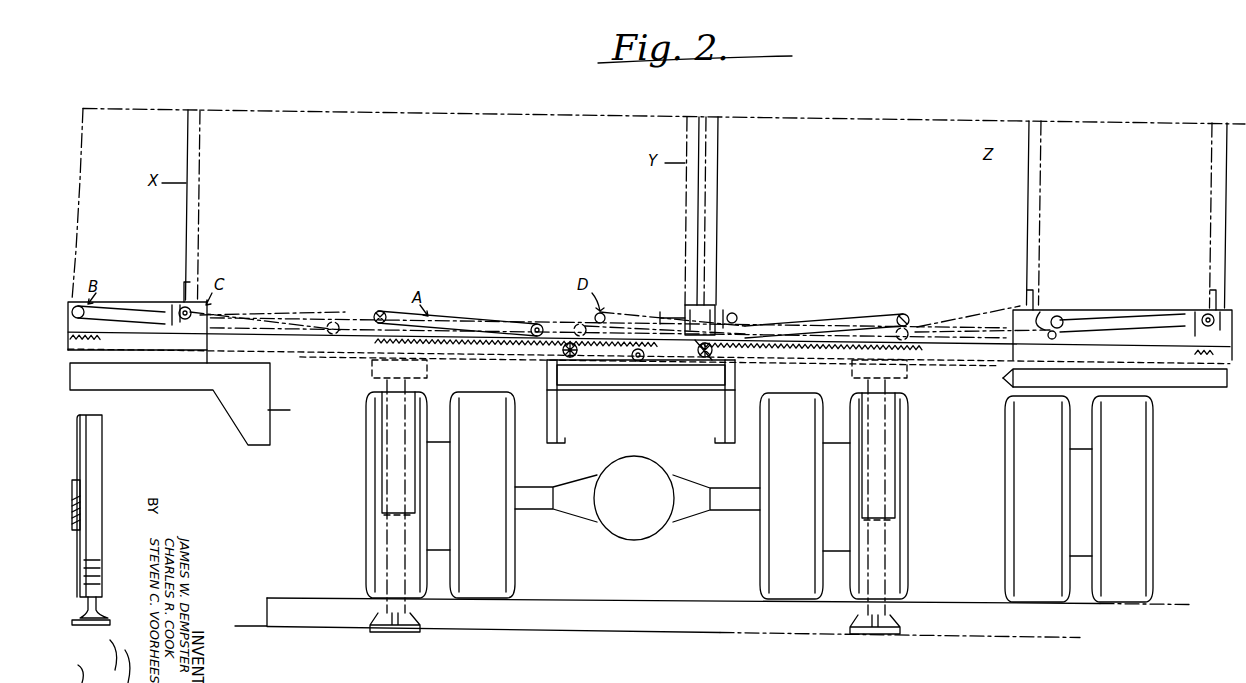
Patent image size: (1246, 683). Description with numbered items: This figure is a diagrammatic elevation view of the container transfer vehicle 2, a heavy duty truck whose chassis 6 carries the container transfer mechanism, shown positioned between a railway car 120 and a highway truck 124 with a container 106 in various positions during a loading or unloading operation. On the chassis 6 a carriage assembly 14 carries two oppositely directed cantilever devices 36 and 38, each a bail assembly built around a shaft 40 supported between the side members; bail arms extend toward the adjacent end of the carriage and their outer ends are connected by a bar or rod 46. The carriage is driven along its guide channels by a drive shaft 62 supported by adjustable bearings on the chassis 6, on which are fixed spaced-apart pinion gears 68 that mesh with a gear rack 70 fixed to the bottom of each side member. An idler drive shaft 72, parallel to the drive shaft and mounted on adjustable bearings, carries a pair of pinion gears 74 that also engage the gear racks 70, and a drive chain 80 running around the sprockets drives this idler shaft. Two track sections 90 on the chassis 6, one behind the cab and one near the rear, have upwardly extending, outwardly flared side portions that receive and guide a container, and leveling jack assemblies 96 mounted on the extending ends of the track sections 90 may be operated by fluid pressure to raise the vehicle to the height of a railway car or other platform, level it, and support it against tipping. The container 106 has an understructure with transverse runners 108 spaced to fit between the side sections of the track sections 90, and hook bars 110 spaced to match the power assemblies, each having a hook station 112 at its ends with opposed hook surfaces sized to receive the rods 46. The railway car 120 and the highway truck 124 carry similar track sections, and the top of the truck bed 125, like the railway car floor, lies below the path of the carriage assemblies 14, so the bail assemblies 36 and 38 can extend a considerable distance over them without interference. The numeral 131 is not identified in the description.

The container transfer vehicle 2 is at (361, 446).
The chassis 6 is at (557, 412).
The carriage assembly 14 is at (740, 312).
The cantilever device 36 is at (118, 300).
The cantilever device 38 is at (838, 318).
The shaft 40 is at (539, 324).
The bar or rod 46 is at (380, 311).
The drive shaft 62 is at (573, 357).
The pinion gear 68 is at (590, 350).
The gear rack 70 is at (375, 344).
The idler drive shaft 72 is at (706, 358).
The pinion gear 74 is at (698, 356).
The drive chain 80 is at (664, 388).
The track section 90 is at (755, 398).
The leveling jack assembly 96 is at (373, 500).
The container 106 is at (170, 147).
The guides or runners 108 is at (1013, 363).
The hook bar 110 is at (1075, 318).
The hook station 112 is at (1205, 308).
The railway car 120 is at (294, 411).
The highway truck 124 is at (1013, 386).
The top of the bed of the truck 125 is at (1010, 375).
The bar 131 is at (250, 360).